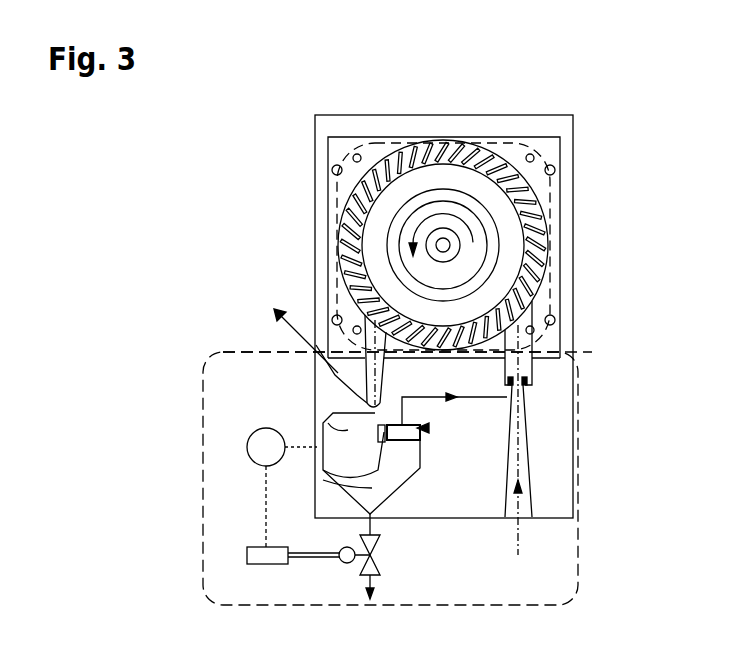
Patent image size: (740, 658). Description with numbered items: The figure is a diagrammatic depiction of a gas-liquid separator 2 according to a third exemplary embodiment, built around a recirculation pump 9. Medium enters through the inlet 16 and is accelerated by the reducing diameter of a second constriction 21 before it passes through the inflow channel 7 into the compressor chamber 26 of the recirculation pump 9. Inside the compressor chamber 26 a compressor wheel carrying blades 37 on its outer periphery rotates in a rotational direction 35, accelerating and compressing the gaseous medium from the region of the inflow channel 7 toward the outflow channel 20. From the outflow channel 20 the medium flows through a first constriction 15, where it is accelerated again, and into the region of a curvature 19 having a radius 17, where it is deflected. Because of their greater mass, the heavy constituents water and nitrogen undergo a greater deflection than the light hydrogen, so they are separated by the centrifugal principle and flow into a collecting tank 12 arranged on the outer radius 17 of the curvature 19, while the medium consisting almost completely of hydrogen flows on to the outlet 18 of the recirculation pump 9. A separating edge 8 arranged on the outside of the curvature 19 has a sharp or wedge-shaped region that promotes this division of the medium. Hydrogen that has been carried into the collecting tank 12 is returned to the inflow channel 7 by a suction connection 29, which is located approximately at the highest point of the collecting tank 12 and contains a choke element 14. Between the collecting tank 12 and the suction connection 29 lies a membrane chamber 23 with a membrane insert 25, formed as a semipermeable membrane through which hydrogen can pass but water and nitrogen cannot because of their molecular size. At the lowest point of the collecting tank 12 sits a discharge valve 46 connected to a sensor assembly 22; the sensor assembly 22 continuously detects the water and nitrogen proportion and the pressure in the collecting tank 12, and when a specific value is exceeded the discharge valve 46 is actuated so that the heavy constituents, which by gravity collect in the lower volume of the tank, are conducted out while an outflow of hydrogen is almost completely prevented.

The gas-liquid separator 2 is at (198, 558).
The inflow channel 7 is at (395, 373).
The separating edge 8 is at (323, 428).
The recirculation pump 9 is at (555, 125).
The collecting tank 12 is at (372, 488).
The choke element 14 is at (480, 400).
The first constriction 15 is at (532, 350).
The inlet 16 is at (530, 502).
The radius 17 is at (323, 478).
The outlet 18 is at (308, 388).
The curvature 19 is at (310, 338).
The outflow channel 20 is at (353, 383).
The second constriction 21 is at (530, 390).
The sensor assembly 22 is at (247, 445).
The membrane chamber 23 is at (422, 438).
The membrane insert 25 is at (426, 428).
The compressor chamber 26 is at (564, 182).
The suction connection 29 is at (500, 397).
The rotational direction 35 is at (448, 215).
The blades 37 is at (551, 206).
The discharge valve 46 is at (382, 565).